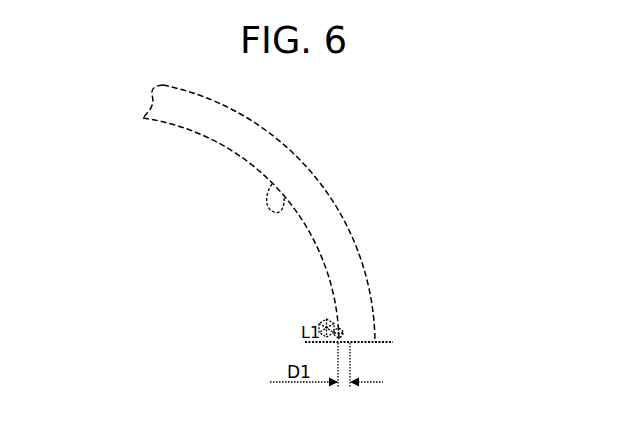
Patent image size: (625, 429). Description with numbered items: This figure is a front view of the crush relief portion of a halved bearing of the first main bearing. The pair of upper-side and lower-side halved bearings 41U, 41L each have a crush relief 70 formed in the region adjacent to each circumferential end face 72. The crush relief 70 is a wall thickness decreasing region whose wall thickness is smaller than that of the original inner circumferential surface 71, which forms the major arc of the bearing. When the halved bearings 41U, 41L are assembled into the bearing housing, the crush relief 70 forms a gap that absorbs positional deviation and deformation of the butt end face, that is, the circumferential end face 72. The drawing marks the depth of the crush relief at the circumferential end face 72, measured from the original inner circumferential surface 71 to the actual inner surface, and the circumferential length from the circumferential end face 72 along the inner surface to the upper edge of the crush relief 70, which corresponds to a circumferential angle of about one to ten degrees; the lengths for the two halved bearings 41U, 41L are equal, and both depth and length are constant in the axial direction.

The upper-side halved bearing 41U is at (260, 213).
The lower-side halved bearing 41L is at (243, 123).
The original inner circumferential surface 71 is at (281, 207).
The crush relief 70 is at (342, 331).
The circumferential end face 72 is at (370, 343).